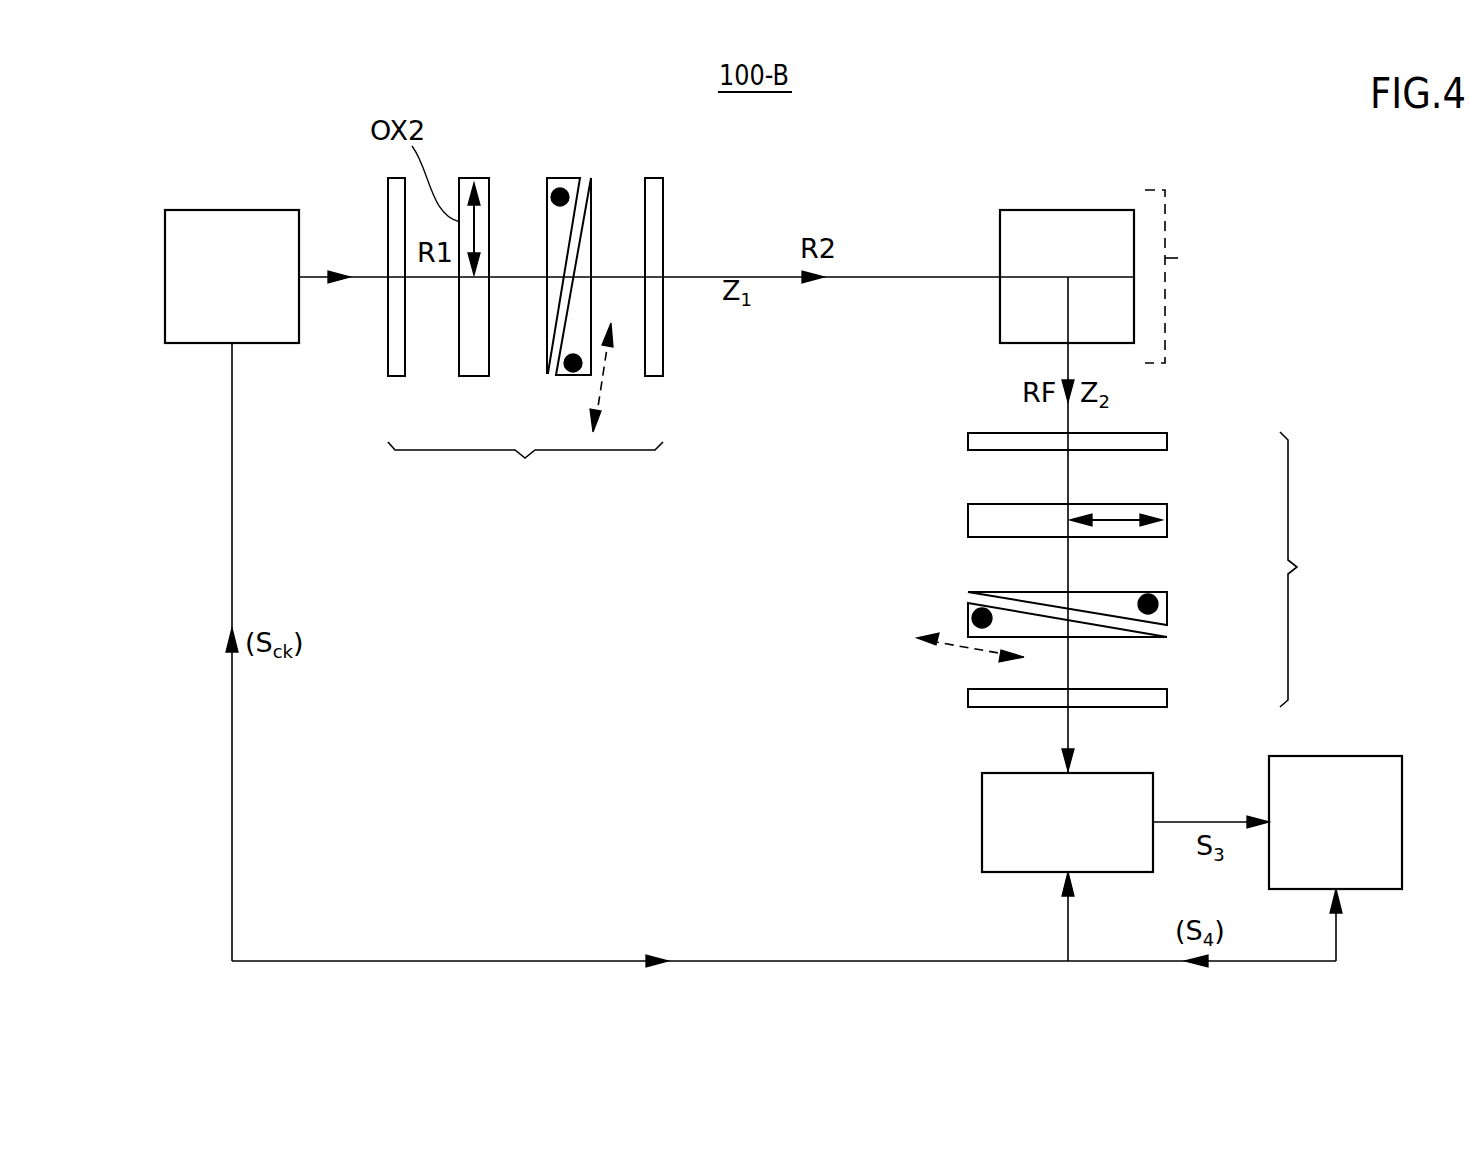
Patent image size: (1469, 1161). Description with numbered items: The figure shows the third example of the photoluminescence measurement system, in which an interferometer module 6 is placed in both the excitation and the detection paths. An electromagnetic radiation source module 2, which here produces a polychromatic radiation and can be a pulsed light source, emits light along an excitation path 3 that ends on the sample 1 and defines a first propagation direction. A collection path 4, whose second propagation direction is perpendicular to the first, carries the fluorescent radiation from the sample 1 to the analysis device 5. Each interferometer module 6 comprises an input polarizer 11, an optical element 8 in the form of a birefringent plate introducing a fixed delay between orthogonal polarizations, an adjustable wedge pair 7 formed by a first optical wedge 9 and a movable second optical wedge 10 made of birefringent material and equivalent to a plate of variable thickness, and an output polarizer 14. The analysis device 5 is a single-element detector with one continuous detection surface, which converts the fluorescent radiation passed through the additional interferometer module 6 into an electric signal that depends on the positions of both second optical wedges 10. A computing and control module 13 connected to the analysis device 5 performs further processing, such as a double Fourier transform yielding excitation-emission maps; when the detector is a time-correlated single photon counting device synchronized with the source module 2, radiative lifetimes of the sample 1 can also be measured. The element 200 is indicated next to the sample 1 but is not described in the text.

The sample 1 is at (1000, 250).
The electromagnetic radiation source module 2 is at (165, 273).
The excitation path 3 is at (815, 182).
The collection path 4 is at (922, 680).
The analysis device 5 is at (982, 808).
The interferometer module 6 is at (472, 450).
The adjustable wedge pair 7 is at (1167, 600).
The optical element 8 is at (472, 178).
The first optical wedge 9 is at (545, 222).
The second optical wedge 10 is at (588, 228).
The input polarizer 11 is at (388, 222).
The computing and control module 13 is at (1350, 838).
The output polarizer 14 is at (654, 178).
The transducer 200 is at (1182, 254).